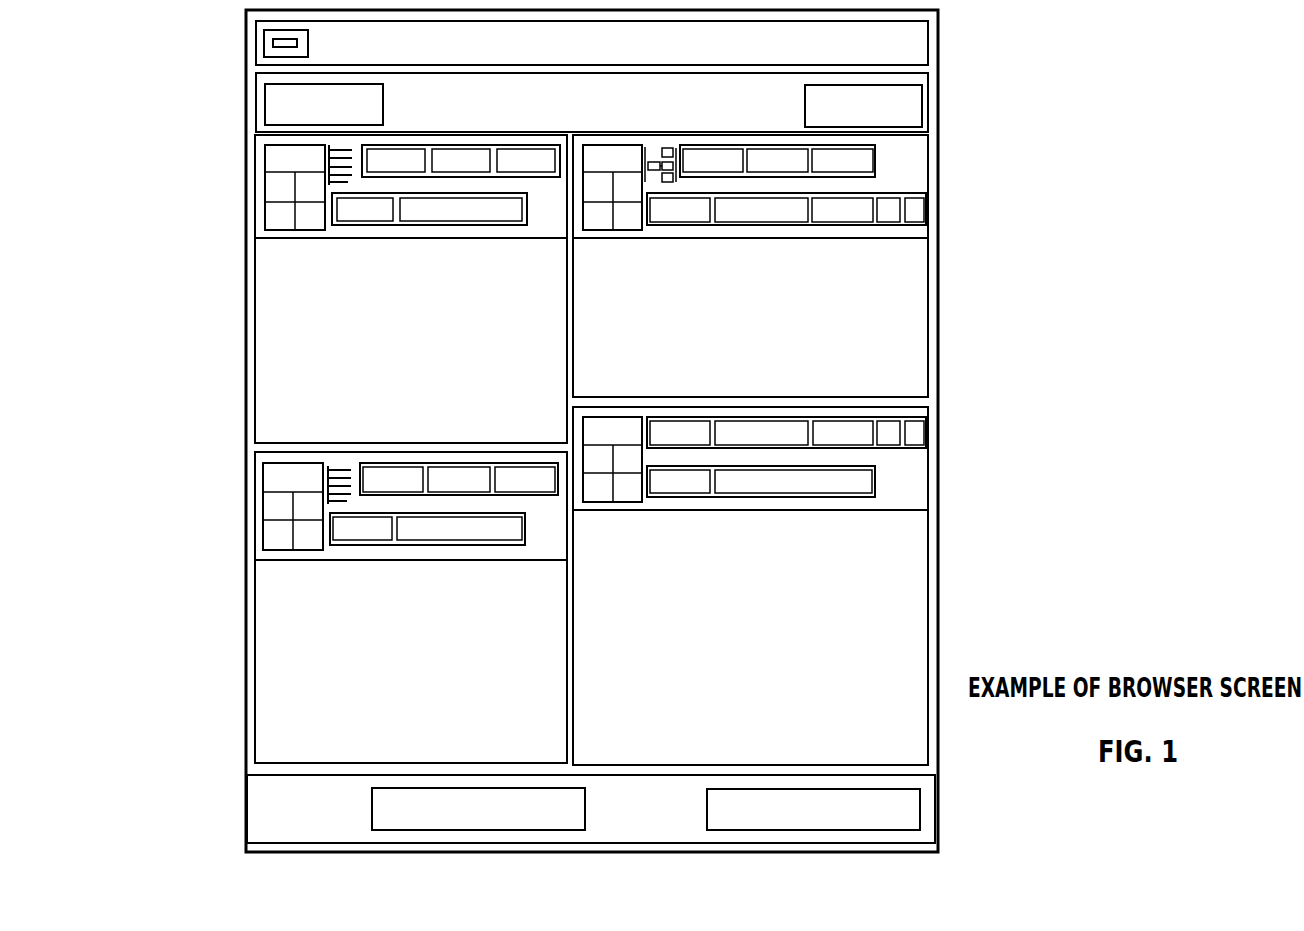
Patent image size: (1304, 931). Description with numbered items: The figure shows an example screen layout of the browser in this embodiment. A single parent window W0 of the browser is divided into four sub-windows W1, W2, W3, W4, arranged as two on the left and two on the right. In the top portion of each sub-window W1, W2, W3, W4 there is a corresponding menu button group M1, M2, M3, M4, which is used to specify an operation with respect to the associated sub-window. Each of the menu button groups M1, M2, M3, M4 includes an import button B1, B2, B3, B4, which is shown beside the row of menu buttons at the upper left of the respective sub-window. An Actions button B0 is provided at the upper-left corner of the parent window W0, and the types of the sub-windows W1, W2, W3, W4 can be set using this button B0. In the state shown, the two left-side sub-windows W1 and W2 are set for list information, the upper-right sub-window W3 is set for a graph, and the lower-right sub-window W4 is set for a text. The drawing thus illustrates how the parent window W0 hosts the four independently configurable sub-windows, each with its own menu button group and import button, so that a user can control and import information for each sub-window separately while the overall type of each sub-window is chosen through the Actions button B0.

The parent window W0 is at (940, 58).
The Actions button B0 is at (376, 104).
The sub-window W1 is at (411, 289).
The sub-window W2 is at (411, 607).
The sub-window W3 is at (750, 266).
The sub-window W4 is at (750, 586).
The import button B1 is at (298, 160).
The import button B2 is at (290, 478).
The import button B3 is at (615, 160).
The import button B4 is at (618, 432).
The menu button group M1 is at (242, 240).
The menu button group M2 is at (242, 560).
The menu button group M3 is at (947, 245).
The menu button group M4 is at (947, 515).